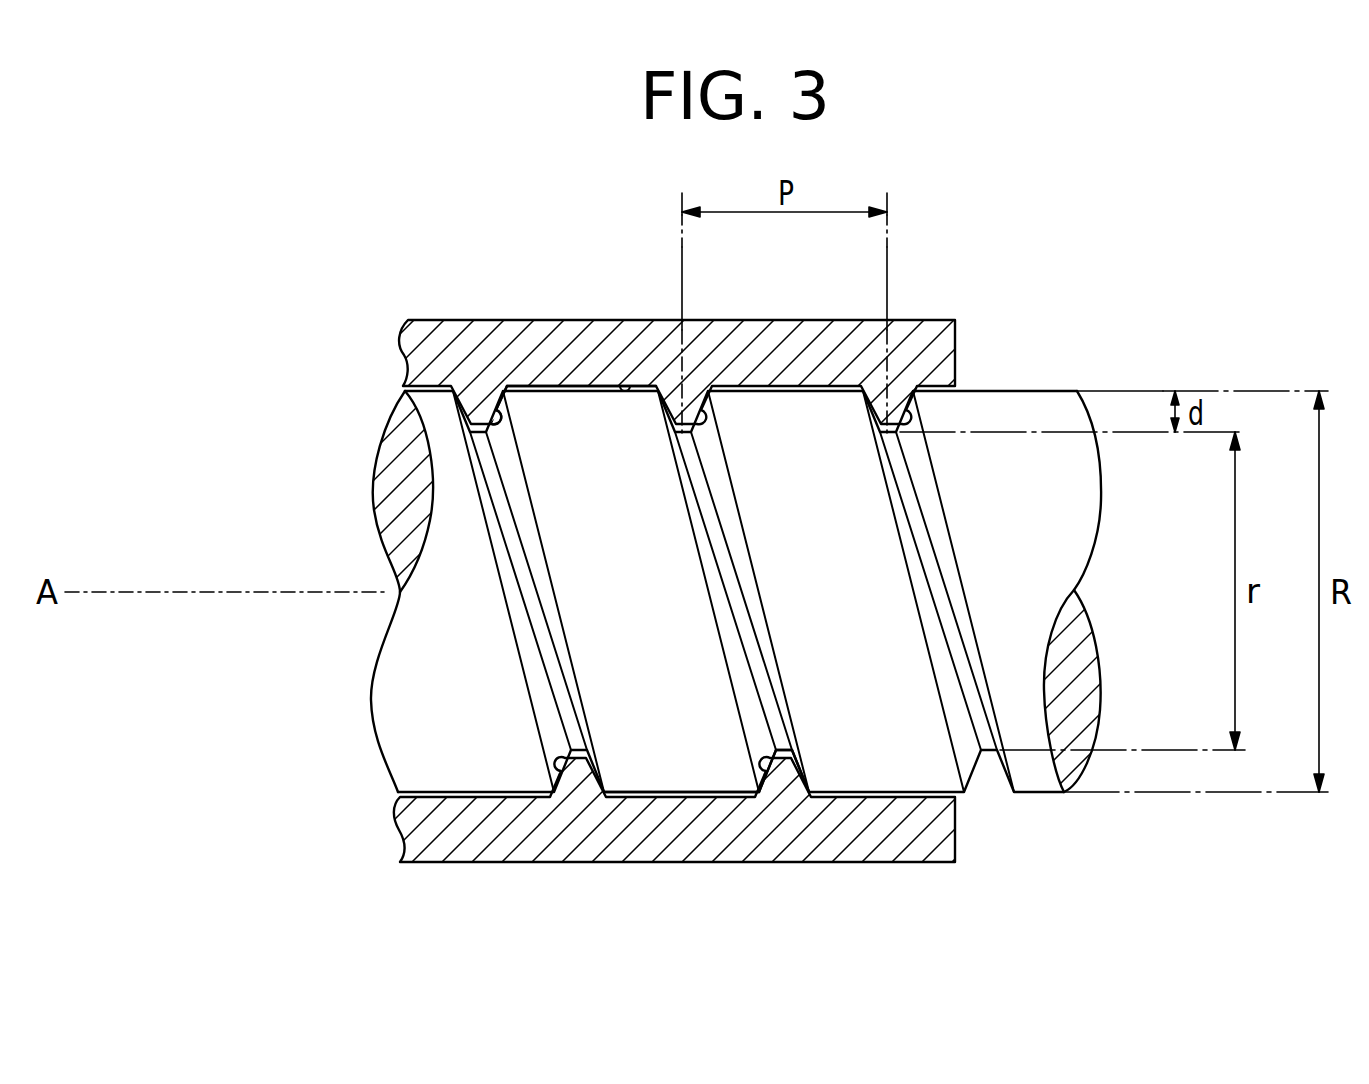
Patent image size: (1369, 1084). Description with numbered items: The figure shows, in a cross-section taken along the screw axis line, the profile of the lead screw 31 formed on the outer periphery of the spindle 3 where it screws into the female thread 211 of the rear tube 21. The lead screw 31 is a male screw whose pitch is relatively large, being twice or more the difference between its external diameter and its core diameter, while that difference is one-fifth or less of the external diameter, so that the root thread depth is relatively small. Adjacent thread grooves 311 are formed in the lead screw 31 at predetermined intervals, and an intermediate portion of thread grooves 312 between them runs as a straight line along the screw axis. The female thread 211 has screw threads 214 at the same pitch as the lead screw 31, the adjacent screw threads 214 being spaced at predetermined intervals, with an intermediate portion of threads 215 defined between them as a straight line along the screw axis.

The rear tube 21 is at (420, 323).
The female thread 211 is at (620, 384).
The screw threads 214 is at (478, 418).
The intermediate portion of threads 215 is at (590, 388).
The spindle 3 is at (684, 616).
The lead screw 31 is at (508, 780).
The thread grooves 311 is at (760, 753).
The intermediate portion of thread grooves 312 is at (713, 780).